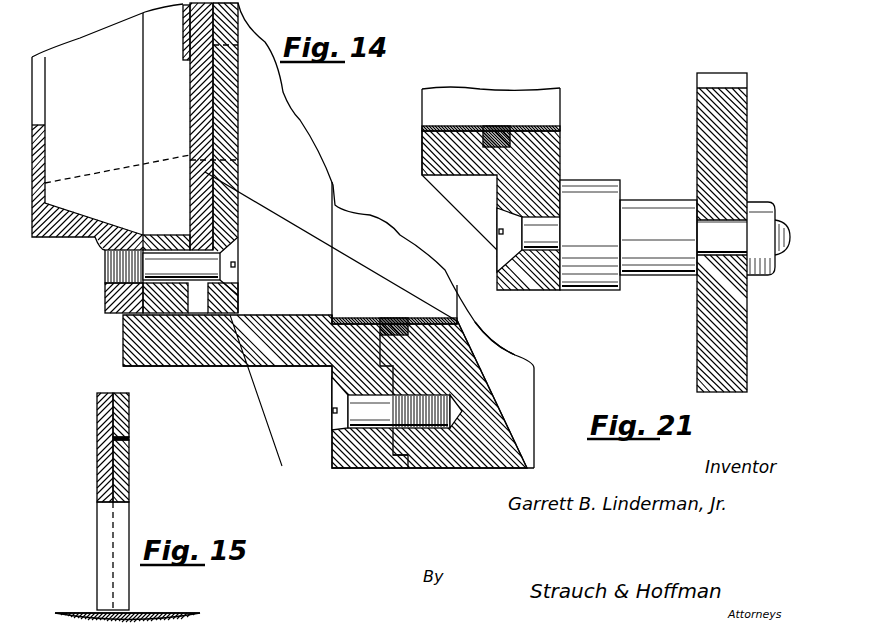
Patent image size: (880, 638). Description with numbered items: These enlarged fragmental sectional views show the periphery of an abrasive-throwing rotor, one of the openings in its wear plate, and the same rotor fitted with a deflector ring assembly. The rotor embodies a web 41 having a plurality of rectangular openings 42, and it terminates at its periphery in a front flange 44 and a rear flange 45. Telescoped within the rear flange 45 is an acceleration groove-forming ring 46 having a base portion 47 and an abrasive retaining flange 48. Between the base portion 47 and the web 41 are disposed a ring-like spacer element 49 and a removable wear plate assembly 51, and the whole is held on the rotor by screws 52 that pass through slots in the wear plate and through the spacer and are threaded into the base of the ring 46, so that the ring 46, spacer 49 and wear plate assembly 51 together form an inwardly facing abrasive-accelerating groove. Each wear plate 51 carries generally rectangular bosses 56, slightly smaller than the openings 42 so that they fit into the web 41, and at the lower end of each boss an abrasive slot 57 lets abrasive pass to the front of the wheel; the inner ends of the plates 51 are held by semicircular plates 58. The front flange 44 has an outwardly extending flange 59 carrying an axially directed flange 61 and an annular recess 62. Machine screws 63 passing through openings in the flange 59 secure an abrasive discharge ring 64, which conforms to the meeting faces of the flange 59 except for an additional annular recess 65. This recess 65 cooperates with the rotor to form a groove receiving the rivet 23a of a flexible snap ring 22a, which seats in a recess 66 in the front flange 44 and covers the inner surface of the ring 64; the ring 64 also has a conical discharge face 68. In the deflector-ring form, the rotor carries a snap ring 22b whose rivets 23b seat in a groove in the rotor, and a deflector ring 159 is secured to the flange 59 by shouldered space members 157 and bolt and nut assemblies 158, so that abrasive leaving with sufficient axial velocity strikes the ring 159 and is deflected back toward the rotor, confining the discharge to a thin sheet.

In FIG. 14, the flexible snap ring 22a is at (371, 318).
In FIG. 21, the snap ring 22b is at (443, 126).
In FIG. 14, the rivet 23a is at (398, 320).
In FIG. 21, the rivets 23b is at (490, 130).
In FIG. 14, the web 41 is at (238, 175).
In FIG. 15, the web 41 is at (127, 420).
In FIG. 14, the rectangular openings 42 is at (238, 40).
In FIG. 15, the rectangular openings 42 is at (129, 438).
In FIG. 14, the front flange 44 is at (293, 368).
In FIG. 15, the front flange 44 is at (173, 612).
In FIG. 14, the rear flange 45 is at (123, 352).
In FIG. 15, the rear flange 45 is at (63, 611).
In FIG. 14, the acceleration groove-forming ring 46 is at (98, 245).
In FIG. 14, the base portion 47 is at (105, 315).
In FIG. 14, the abrasive retaining flange 48 is at (45, 172).
In FIG. 14, the ring-like spacer element 49 is at (163, 235).
In FIG. 14, the removable wear plate assembly 51 is at (190, 193).
In FIG. 15, the removable wear plate assembly 51 is at (100, 452).
In FIG. 14, the screws 52 is at (234, 258).
In FIG. 15, the bosses 56 is at (129, 486).
In FIG. 15, the abrasive slot 57 is at (100, 533).
In FIG. 14, the semicircular plates 58 is at (183, 52).
In FIG. 14, the outwardly extending flange 59 is at (368, 470).
In FIG. 21, the outwardly extending flange 59 is at (497, 188).
In FIG. 14, the axially directed flange 61 is at (395, 470).
In FIG. 14, the annular recess 62 is at (330, 326).
In FIG. 14, the machine screws 63 is at (331, 427).
In FIG. 14, the abrasive discharge ring 64 is at (500, 450).
In FIG. 14, the annular recess 65 is at (427, 321).
In FIG. 14, the recess 66 is at (333, 325).
In FIG. 14, the conical discharge face 68 is at (482, 368).
In FIG. 21, the shouldered space members 157 is at (597, 180).
In FIG. 21, the bolt and nut assemblies 158 is at (497, 230).
In FIG. 21, the deflector ring 159 is at (697, 343).